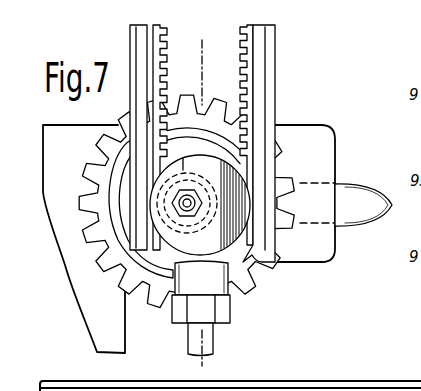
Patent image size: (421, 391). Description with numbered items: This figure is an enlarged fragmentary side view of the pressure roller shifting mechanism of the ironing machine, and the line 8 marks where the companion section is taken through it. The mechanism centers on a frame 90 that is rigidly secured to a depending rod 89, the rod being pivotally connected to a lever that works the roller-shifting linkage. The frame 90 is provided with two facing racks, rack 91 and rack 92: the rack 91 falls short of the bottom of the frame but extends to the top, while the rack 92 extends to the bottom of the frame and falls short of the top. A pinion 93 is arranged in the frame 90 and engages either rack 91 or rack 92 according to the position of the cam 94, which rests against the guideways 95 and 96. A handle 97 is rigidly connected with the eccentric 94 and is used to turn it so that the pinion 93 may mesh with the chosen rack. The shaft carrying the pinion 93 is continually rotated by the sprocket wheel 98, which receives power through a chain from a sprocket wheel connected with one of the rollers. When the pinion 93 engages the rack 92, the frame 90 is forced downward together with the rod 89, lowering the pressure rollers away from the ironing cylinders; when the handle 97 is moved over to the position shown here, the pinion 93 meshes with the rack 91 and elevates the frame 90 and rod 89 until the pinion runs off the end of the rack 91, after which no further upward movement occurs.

The section line 8— 8 is at (202, 203).
The depending rod 89 is at (216, 343).
The frame 90 is at (252, 259).
The rack 91 is at (168, 61).
The rack 92 is at (240, 54).
The pinion 93 is at (152, 177).
The cam (eccentric) 94 is at (177, 247).
The guideway 95 is at (258, 88).
The guideway 96 is at (148, 81).
The handle 97 is at (357, 197).
The sprocket wheel 98 is at (83, 192).